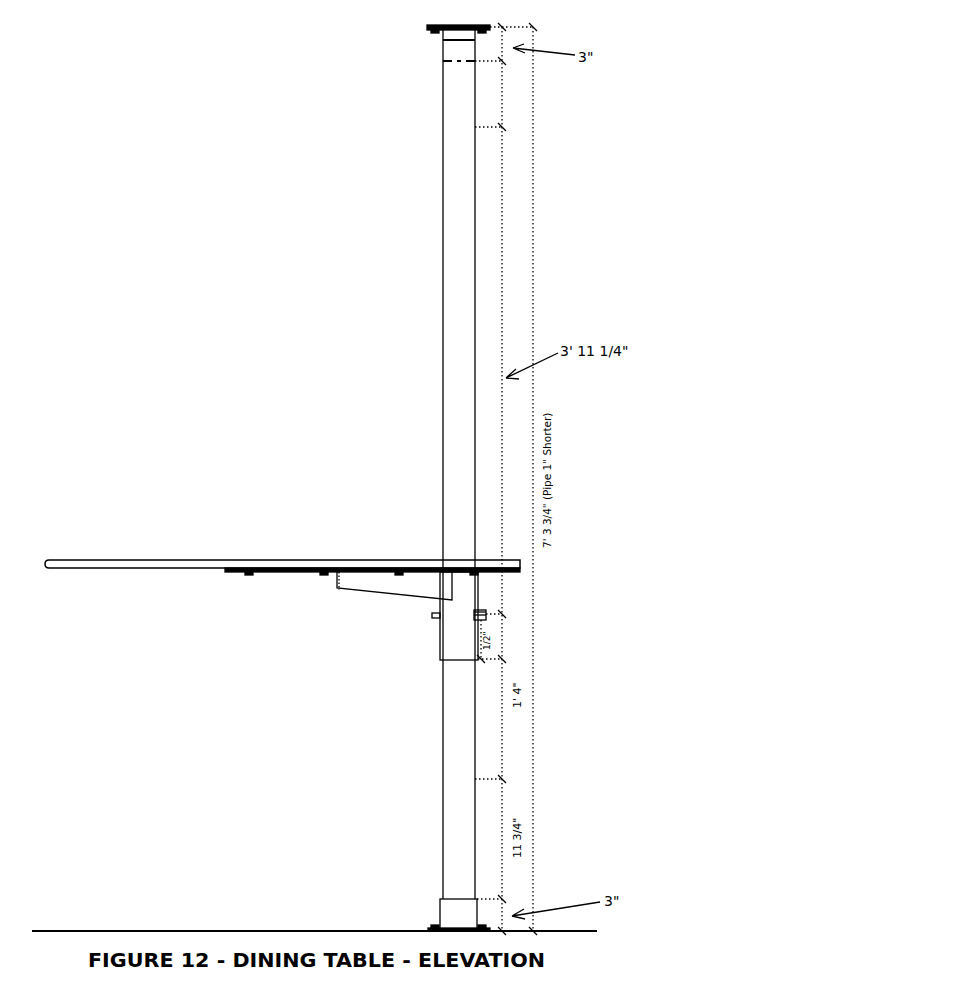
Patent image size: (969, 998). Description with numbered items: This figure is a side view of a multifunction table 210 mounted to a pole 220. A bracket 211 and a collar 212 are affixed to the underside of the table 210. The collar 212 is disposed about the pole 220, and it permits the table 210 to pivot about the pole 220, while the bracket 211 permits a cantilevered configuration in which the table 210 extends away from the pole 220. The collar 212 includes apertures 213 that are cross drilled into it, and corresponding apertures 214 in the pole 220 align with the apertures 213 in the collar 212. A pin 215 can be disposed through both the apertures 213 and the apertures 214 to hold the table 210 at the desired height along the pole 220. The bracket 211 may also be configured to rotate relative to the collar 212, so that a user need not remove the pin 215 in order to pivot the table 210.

The multifunction table 210 is at (291, 546).
The bracket 211 is at (425, 590).
The collar 212 is at (455, 623).
The apertures 213 is at (479, 620).
The apertures 214 is at (470, 128).
The pin 215 is at (479, 612).
The pole 220 is at (460, 255).